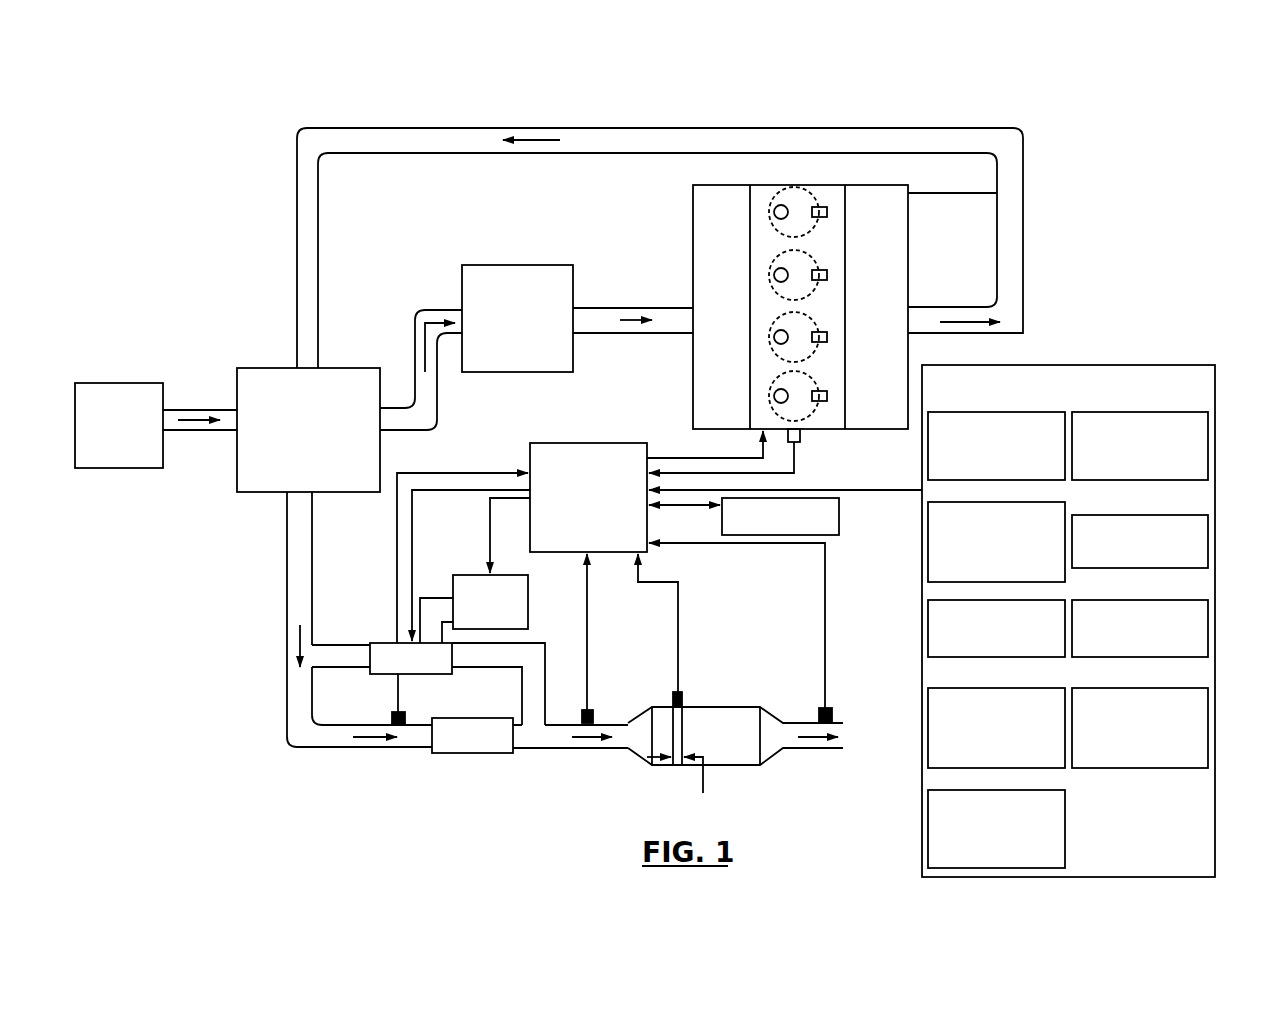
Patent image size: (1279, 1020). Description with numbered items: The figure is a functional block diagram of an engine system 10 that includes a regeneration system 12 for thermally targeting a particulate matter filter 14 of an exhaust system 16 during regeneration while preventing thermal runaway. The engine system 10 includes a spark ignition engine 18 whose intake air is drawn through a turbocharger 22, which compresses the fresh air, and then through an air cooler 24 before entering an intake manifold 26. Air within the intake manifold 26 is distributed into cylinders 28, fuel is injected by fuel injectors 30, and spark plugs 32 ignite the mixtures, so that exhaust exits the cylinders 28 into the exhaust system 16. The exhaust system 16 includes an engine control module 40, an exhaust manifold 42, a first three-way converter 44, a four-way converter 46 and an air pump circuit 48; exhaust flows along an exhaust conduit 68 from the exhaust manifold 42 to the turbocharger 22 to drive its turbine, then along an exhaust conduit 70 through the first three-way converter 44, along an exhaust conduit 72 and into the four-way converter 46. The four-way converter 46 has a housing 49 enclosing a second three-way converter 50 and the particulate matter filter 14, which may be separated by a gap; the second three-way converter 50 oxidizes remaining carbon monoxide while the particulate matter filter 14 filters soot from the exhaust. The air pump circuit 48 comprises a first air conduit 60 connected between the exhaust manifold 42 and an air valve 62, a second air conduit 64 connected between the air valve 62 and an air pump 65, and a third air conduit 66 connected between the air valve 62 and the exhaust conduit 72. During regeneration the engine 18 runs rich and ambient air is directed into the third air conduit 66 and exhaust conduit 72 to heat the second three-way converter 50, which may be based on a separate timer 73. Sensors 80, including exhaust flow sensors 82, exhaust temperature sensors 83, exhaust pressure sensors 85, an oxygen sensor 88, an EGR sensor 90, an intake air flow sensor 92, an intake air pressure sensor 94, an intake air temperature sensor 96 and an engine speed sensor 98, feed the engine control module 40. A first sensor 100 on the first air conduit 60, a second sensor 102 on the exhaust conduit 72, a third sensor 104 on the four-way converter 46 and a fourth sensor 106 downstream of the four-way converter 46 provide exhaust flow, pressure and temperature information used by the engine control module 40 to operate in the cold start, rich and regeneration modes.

The engine system 10 is at (280, 83).
The regeneration system 12 is at (232, 604).
The particulate matter (PM) filter 14 is at (118, 383).
The exhaust system 16 is at (350, 810).
The engine 18 is at (793, 185).
The turbocharger 22 is at (335, 368).
The air cooler 24 is at (543, 265).
The intake manifold 26 is at (692, 213).
The cylinders 28 is at (817, 195).
The fuel injectors 30 is at (827, 212).
The spark plugs 32 is at (774, 212).
The engine control module (ECM) 40 is at (585, 443).
The exhaust manifold 42 is at (928, 193).
The first three-way converter (TWC) 44 is at (478, 753).
The 4-way converter (FWC) 46 is at (760, 707).
The air pump circuit 48 is at (383, 540).
The housing 49 is at (735, 707).
The second three-way converter (TWC) 50 is at (663, 708).
The first air conduit 60 is at (342, 668).
The air valve 62 is at (390, 640).
The second air conduit 64 is at (428, 597).
The air pump 65 is at (528, 597).
The third air conduit 66 is at (513, 670).
The exhaust conduit 68 is at (295, 255).
The exhaust conduit 70 is at (287, 567).
The exhaust conduit 72 is at (572, 750).
The timer 73 is at (842, 512).
The sensors 80 is at (1160, 364).
The exhaust flow sensors 82 is at (980, 412).
The exhaust temperature sensors 83 is at (1210, 442).
The exhaust pressure sensors 85 is at (927, 555).
The oxygen sensor 88 is at (1210, 545).
The EGR sensor 90 is at (927, 630).
The intake air flow sensor 92 is at (1210, 617).
The intake air pressure sensor 94 is at (928, 693).
The intake air temperature sensor 96 is at (1210, 717).
The engine speed sensor 98 is at (928, 815).
The first exhaust flow, pressure and/or temperature sensor 100 is at (407, 712).
The second exhaust flow, pressure and/or temperature sensor 102 is at (595, 712).
The third exhaust flow, pressure and/or temperature sensor 104 is at (683, 695).
The fourth exhaust flow, pressure and/or temperature sensor 106 is at (833, 716).